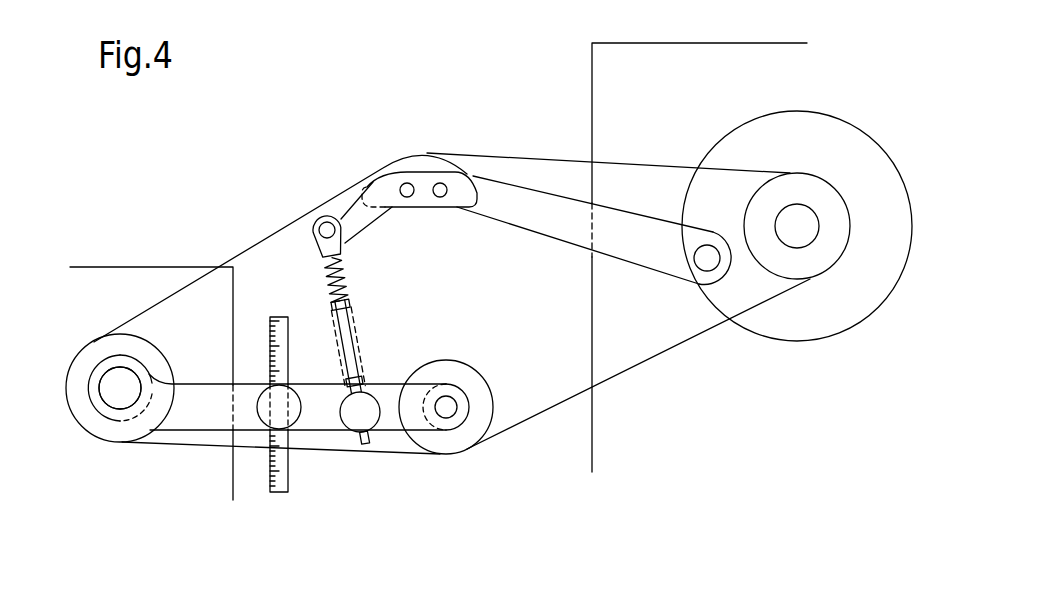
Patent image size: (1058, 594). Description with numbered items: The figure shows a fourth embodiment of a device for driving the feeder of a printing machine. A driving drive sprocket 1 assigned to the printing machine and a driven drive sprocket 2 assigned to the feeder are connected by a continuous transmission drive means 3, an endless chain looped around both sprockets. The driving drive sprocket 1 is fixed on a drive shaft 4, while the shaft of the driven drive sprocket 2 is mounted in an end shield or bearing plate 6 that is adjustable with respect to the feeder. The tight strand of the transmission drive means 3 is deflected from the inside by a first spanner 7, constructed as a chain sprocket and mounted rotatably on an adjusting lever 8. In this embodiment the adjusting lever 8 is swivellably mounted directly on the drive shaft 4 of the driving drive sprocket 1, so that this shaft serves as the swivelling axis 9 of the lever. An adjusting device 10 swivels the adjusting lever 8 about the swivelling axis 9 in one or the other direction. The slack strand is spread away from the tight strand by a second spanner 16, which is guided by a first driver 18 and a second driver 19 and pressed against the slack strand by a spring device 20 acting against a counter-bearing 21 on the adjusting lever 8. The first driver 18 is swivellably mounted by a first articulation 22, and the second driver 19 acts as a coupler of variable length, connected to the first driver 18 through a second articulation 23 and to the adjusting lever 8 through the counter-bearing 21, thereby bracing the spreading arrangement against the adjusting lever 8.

The driving drive sprocket 1 is at (123, 443).
The driven drive sprocket 2 is at (836, 224).
The transmission drive means 3 is at (632, 365).
The drive shaft 4 is at (108, 378).
The swivelling axis 9 is at (120, 388).
The end shield or bearing plate 6 is at (850, 310).
The first spanner 7 is at (457, 453).
The adjusting lever 8 is at (203, 405).
The adjusting device 10 is at (279, 496).
The second spanner 16 is at (408, 164).
The first driver 18 is at (545, 236).
The second driver 19 is at (358, 342).
The spring device 20 is at (349, 279).
The counter-bearing 21 is at (343, 433).
The first articulation 22 is at (699, 268).
The second articulation 23 is at (312, 232).